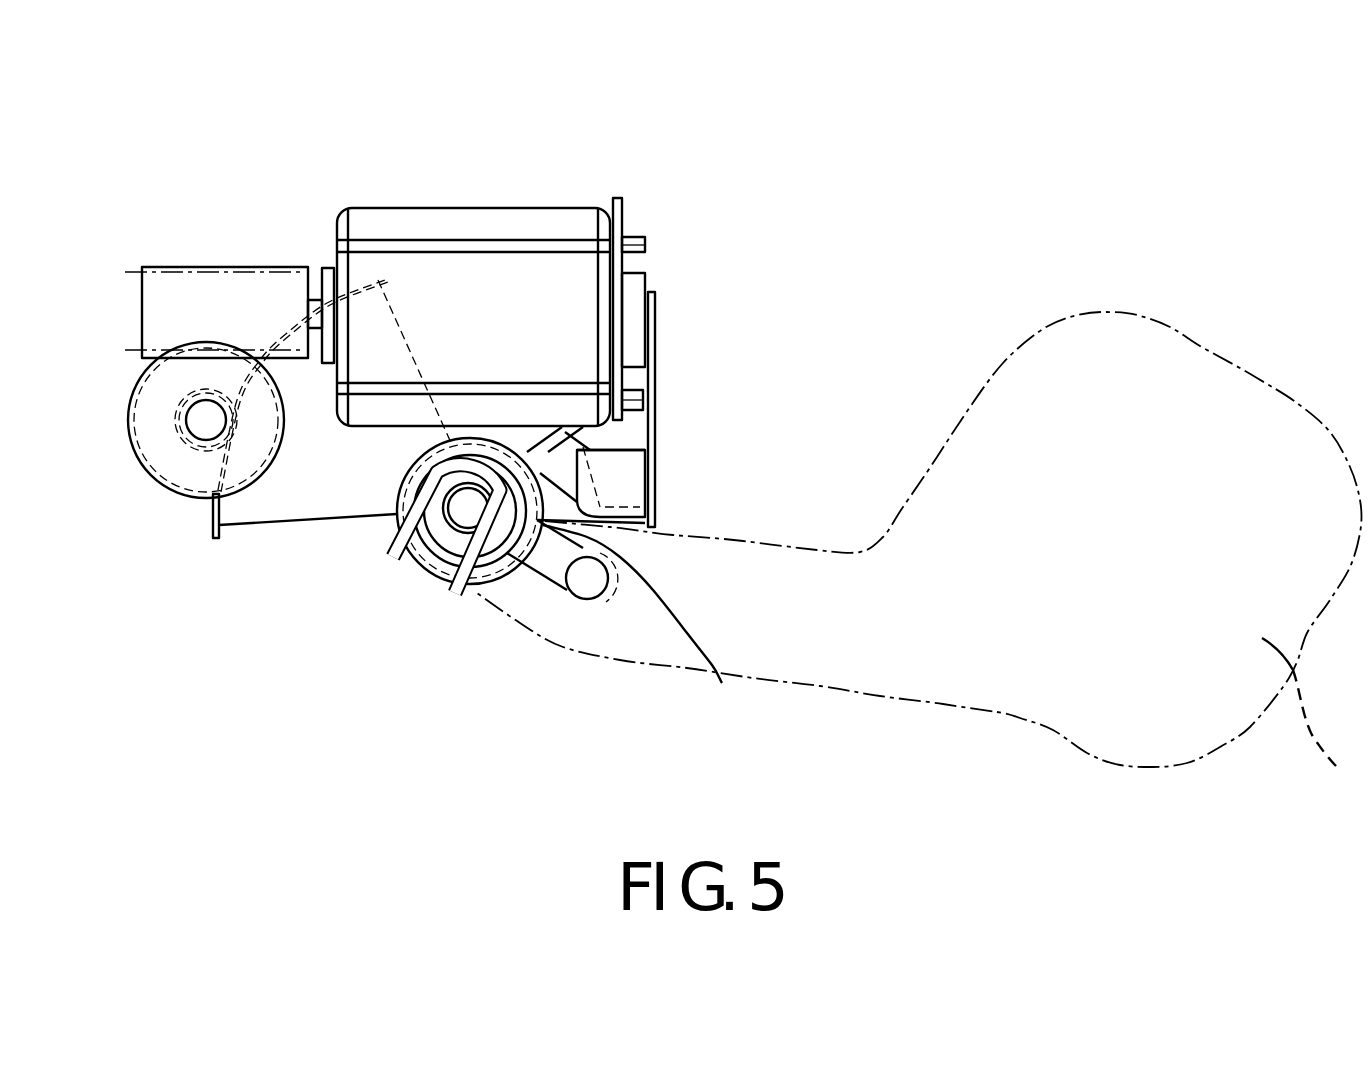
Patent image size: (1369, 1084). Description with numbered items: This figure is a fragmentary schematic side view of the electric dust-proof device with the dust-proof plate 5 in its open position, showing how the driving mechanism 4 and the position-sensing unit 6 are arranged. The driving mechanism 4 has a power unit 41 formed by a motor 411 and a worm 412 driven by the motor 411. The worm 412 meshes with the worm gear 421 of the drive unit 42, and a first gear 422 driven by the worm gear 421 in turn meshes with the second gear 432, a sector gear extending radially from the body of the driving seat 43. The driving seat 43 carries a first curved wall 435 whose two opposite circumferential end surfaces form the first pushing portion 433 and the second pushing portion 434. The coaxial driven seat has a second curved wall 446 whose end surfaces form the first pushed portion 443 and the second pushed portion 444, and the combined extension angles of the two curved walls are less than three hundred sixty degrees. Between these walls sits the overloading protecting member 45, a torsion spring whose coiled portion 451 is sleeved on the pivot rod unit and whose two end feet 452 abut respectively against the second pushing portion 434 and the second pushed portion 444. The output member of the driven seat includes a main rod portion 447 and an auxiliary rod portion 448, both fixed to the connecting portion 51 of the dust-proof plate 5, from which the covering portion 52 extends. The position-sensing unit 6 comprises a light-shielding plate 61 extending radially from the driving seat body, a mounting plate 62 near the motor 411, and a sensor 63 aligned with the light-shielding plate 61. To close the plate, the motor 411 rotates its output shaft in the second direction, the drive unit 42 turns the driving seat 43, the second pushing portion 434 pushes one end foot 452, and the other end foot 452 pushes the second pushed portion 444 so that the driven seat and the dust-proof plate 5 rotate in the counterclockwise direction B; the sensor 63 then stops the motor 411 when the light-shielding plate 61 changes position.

The driving mechanism 4 is at (272, 178).
The power unit 41 is at (524, 202).
The motor 411 is at (437, 210).
The worm 412 is at (200, 267).
The drive unit 42 is at (125, 393).
The worm gear 421 is at (130, 444).
The first gear 422 is at (186, 444).
The driving seat 43 is at (291, 533).
The second gear 432 is at (215, 517).
The first pushing portion 433 is at (503, 462).
The second pushing portion 434 is at (397, 493).
The first curved wall 435 is at (452, 447).
The first pushed portion 443 is at (590, 447).
The second pushed portion 444 is at (497, 562).
The second curved wall 446 is at (650, 622).
The main rod portion 447 is at (455, 560).
The auxiliary rod portion 448 is at (605, 597).
The overloading protecting member 45 is at (491, 592).
The coiled portion 451 is at (420, 461).
The end feet 452 is at (400, 565).
The dust-proof plate 5 is at (1257, 378).
The connecting portion 51 is at (597, 637).
The covering portion 52 is at (1306, 725).
The position-sensing unit 6 is at (662, 477).
The light-shielding plate 61 is at (650, 508).
The mounting plate 62 is at (628, 448).
The sensor 63 is at (622, 455).
The counterclockwise direction B is at (912, 391).